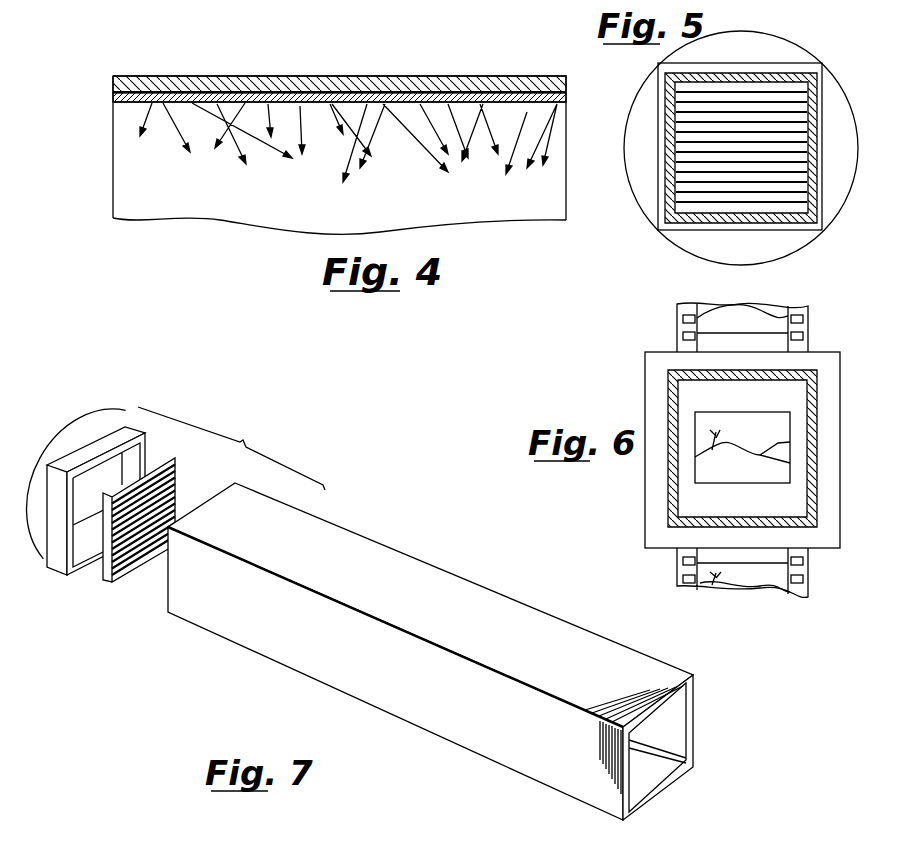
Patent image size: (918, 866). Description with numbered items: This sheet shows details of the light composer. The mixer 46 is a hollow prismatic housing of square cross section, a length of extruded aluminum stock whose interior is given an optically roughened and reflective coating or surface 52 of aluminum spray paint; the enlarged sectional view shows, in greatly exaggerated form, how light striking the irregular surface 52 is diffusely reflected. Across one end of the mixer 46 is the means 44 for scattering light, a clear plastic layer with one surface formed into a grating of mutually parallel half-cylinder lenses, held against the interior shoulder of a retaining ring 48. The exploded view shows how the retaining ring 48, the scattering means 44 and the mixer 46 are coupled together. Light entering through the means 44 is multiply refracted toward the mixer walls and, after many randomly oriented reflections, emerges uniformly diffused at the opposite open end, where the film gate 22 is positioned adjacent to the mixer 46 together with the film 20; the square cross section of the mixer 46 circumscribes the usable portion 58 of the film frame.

In FIG. 6, the film strip 20 is at (715, 318).
In FIG. 6, the film gate 22 is at (658, 372).
In FIG. 5, the means for scattering light 44 is at (703, 173).
In FIG. 7, the means for scattering light 44 is at (165, 455).
In FIG. 4, the mixer 46 is at (286, 76).
In FIG. 5, the mixer 46 is at (748, 222).
In FIG. 6, the mixer 46 is at (668, 477).
In FIG. 7, the mixer 46 is at (432, 580).
In FIG. 5, the retaining ring 48 is at (770, 50).
In FIG. 7, the retaining ring 48 is at (88, 417).
In FIG. 4, the optically roughened and reflective coating or surface 52 is at (147, 103).
In FIG. 6, the usable portion of the film frame 58 is at (707, 472).